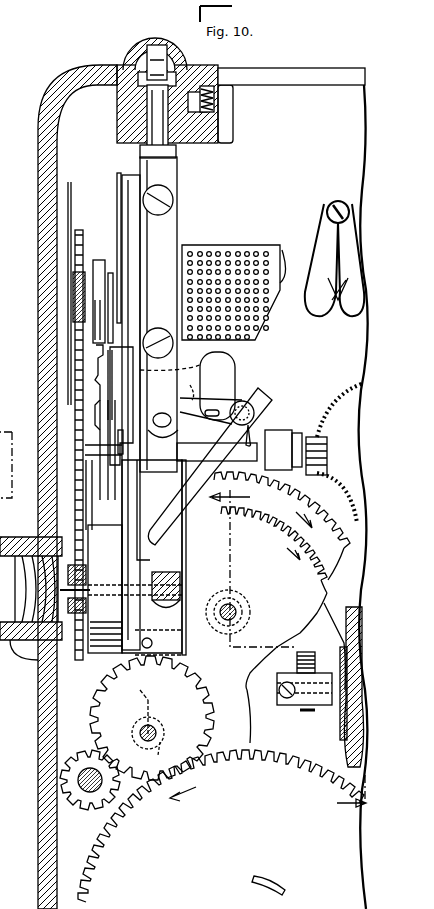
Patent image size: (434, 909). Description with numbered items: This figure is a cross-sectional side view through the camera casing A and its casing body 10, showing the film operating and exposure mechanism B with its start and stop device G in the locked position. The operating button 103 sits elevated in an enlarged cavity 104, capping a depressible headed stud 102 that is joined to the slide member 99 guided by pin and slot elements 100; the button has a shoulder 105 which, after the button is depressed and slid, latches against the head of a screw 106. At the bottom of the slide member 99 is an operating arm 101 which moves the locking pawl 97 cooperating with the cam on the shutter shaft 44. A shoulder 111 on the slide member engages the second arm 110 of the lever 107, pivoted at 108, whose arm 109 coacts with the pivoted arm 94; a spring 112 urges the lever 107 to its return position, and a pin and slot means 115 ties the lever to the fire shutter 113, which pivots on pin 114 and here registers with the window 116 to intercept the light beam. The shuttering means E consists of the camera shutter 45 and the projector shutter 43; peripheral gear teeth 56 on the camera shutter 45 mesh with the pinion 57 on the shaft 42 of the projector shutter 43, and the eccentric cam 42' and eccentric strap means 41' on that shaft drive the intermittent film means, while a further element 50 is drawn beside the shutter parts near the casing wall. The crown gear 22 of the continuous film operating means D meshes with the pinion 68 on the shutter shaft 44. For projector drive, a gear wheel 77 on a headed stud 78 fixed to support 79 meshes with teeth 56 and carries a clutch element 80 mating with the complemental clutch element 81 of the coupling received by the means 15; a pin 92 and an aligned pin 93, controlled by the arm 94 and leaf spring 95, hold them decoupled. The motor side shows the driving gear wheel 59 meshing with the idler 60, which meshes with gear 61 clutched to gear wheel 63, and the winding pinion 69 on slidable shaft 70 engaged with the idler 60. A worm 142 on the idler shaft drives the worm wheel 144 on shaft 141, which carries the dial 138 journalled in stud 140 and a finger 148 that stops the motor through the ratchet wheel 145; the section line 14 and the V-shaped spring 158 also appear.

The casing body 10 is at (42, 118).
The operating button 103 is at (135, 52).
The shoulder 105 is at (170, 47).
The enlarged cavity 104 is at (195, 98).
The screw 106 is at (222, 72).
The depressible headed stud 102 is at (153, 114).
The camera casing A is at (285, 75).
The start and stop device G is at (188, 215).
The slide member 99 is at (166, 230).
The pin and slot elements 100 is at (165, 198).
The fire shutter 113 is at (250, 244).
The window 116 is at (295, 260).
The V-shaped spring 158 is at (334, 263).
The projector shutter 43 is at (67, 213).
The pinion 57 is at (79, 265).
The shaft 42 is at (47, 292).
The eccentric cam 42' is at (57, 301).
The eccentric strap means 41' is at (108, 258).
The film shuttering or exposure means E is at (75, 400).
The camera shutter 45 is at (76, 420).
The peripheral gear teeth 56 is at (85, 455).
The rack 50 is at (77, 495).
The operating arm 101 is at (145, 460).
The second arm 110 is at (206, 400).
The shoulder 111 is at (200, 377).
The pin and slot means 115 is at (211, 404).
The spring 112 is at (246, 405).
The lever 107 is at (249, 397).
The pivot 108 is at (268, 398).
The film operating and exposure mechanism B is at (262, 392).
The pin 114 is at (170, 429).
The locking pawl 97 is at (210, 456).
The shutter shaft 44 is at (270, 432).
The pinion 68 is at (328, 453).
The continuous film operating means D is at (317, 420).
The crown gear 22 is at (333, 395).
The gear wheel 63 is at (340, 512).
The section line 14 is at (288, 652).
The pivoted arm 94 is at (218, 578).
The gear 61 is at (305, 590).
The dial 138 is at (328, 602).
The finger 148 is at (310, 652).
The shaft 141 is at (265, 700).
The stud 140 is at (350, 715).
The arm 109 is at (160, 527).
The aligned pin 93 is at (166, 572).
The ratchet wheel 145 is at (197, 557).
The leaf spring 95 is at (178, 530).
The headed stud 78 is at (98, 565).
The support 79 is at (96, 640).
The clutch element 80 is at (76, 560).
The pin 92 is at (75, 614).
The gear wheel 77 is at (82, 612).
The complemental clutch element 81 is at (52, 538).
The means 15 is at (31, 604).
The idler 60 is at (110, 715).
The worm wheel 144 is at (134, 719).
The worm 142 is at (156, 747).
The winding pinion 69 is at (78, 765).
The slidable shaft 70 is at (88, 792).
The driving gear wheel 59 is at (118, 848).